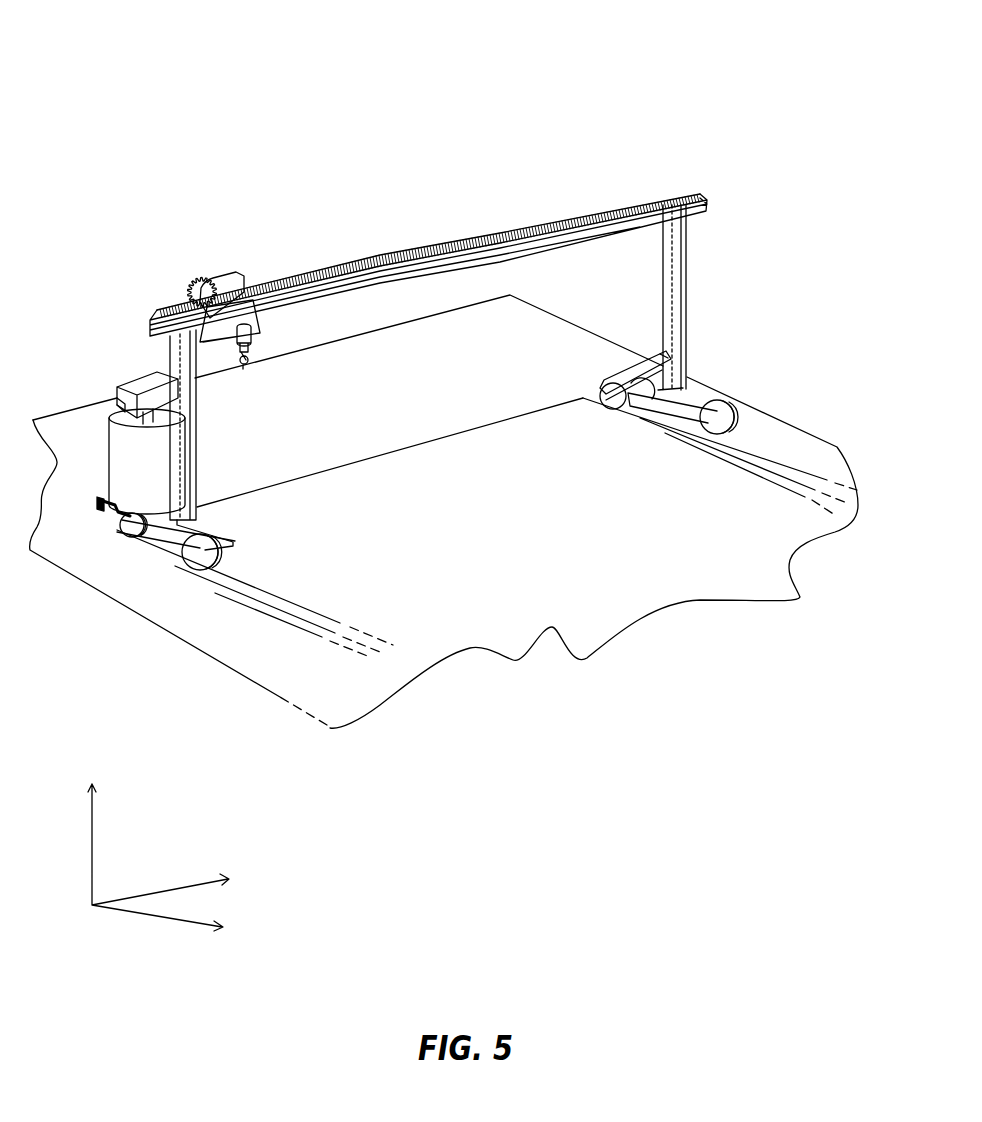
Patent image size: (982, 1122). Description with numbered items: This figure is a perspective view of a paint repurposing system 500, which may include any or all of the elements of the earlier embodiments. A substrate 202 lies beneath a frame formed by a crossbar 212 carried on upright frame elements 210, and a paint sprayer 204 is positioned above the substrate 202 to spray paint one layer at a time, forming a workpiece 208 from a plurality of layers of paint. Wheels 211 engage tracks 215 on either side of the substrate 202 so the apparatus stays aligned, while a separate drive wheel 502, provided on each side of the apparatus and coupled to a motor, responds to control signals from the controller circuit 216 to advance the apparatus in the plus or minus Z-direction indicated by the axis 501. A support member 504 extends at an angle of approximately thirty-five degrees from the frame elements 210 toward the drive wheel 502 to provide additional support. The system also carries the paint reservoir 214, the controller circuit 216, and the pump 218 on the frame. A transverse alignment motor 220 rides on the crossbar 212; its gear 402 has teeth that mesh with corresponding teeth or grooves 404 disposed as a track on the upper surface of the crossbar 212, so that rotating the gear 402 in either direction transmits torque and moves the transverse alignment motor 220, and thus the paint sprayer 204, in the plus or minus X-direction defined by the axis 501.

The paint repurposing system 500 is at (124, 42).
The substrate 202 is at (143, 587).
The paint sprayer 204 is at (248, 364).
The workpiece 208 is at (645, 595).
The frame elements 210 is at (672, 318).
The wheels 211 is at (735, 407).
The crossbar 212 is at (443, 258).
The paint reservoir 214 is at (110, 455).
The tracks 215 is at (773, 453).
The controller circuit 216 is at (130, 380).
The pump 218 is at (115, 398).
The transverse alignment motor 220 is at (235, 282).
The gear 402 is at (200, 277).
The teeth or grooves 404 is at (332, 270).
The axis 501 is at (165, 918).
The drive wheel 502 is at (610, 380).
The support member 504 is at (650, 357).